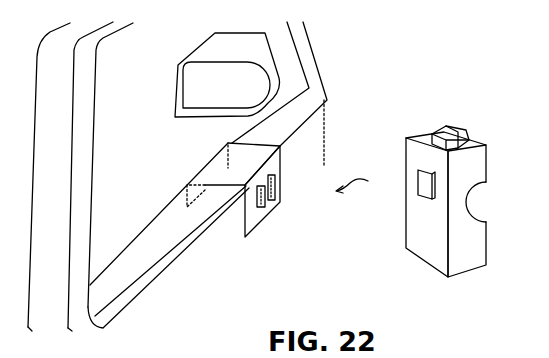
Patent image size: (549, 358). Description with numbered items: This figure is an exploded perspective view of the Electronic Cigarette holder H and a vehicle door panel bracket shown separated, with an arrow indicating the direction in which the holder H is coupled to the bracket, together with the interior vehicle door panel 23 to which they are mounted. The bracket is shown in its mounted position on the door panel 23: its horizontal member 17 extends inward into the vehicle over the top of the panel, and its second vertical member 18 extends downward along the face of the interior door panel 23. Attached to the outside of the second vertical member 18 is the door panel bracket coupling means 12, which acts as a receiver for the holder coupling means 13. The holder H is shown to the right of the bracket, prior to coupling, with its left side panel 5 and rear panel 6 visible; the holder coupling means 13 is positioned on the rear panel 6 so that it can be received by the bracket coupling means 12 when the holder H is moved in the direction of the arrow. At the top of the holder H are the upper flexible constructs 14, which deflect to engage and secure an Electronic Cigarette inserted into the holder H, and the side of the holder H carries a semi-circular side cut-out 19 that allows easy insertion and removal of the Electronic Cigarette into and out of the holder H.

The interior door panel 23 is at (307, 137).
The horizontal member 17 is at (253, 163).
The second vertical member 18 is at (250, 220).
The door panel bracket coupling means 12 is at (275, 182).
The left side panel 5 is at (472, 165).
The rear panel 6 is at (412, 160).
The holder coupling means 13 is at (421, 183).
The upper flexible constructs 14 is at (442, 133).
The semi-circular side cut-outs 19 is at (480, 200).
The holder H is at (433, 248).